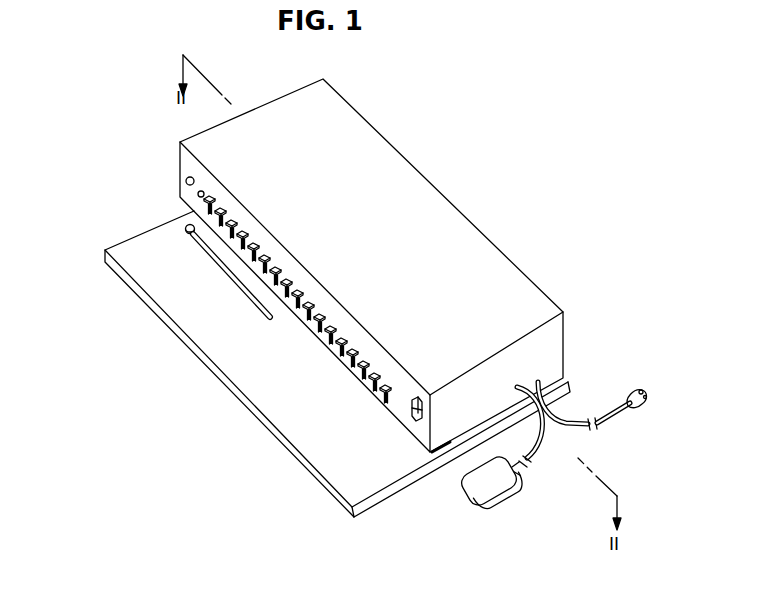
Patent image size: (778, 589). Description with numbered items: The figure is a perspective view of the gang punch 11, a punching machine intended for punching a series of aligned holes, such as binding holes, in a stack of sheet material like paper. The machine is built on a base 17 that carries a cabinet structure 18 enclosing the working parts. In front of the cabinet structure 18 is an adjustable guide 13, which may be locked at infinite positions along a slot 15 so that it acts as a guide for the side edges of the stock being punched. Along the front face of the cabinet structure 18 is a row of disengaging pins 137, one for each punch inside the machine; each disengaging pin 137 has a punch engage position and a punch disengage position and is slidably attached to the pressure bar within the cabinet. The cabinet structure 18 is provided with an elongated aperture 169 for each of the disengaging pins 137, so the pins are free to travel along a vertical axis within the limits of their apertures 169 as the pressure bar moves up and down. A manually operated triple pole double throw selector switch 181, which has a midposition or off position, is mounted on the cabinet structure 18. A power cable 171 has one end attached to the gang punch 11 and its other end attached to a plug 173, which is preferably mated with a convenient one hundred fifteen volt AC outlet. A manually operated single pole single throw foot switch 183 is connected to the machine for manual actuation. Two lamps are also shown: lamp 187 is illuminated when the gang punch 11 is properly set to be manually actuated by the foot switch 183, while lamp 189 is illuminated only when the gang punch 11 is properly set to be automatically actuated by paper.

The gang punch 11 is at (667, 106).
The adjustable guide 13 is at (186, 227).
The slot 15 is at (234, 277).
The base 17 is at (412, 475).
The cabinet structure 18 is at (520, 289).
The disengaging pins 137 is at (212, 197).
The elongated apertures 169 is at (298, 306).
The power cable 171 is at (567, 422).
The plug 173 is at (637, 403).
The selector switch 181 is at (413, 423).
The foot switch 183 is at (490, 484).
The lamp 187 is at (199, 191).
The lamp 189 is at (186, 181).